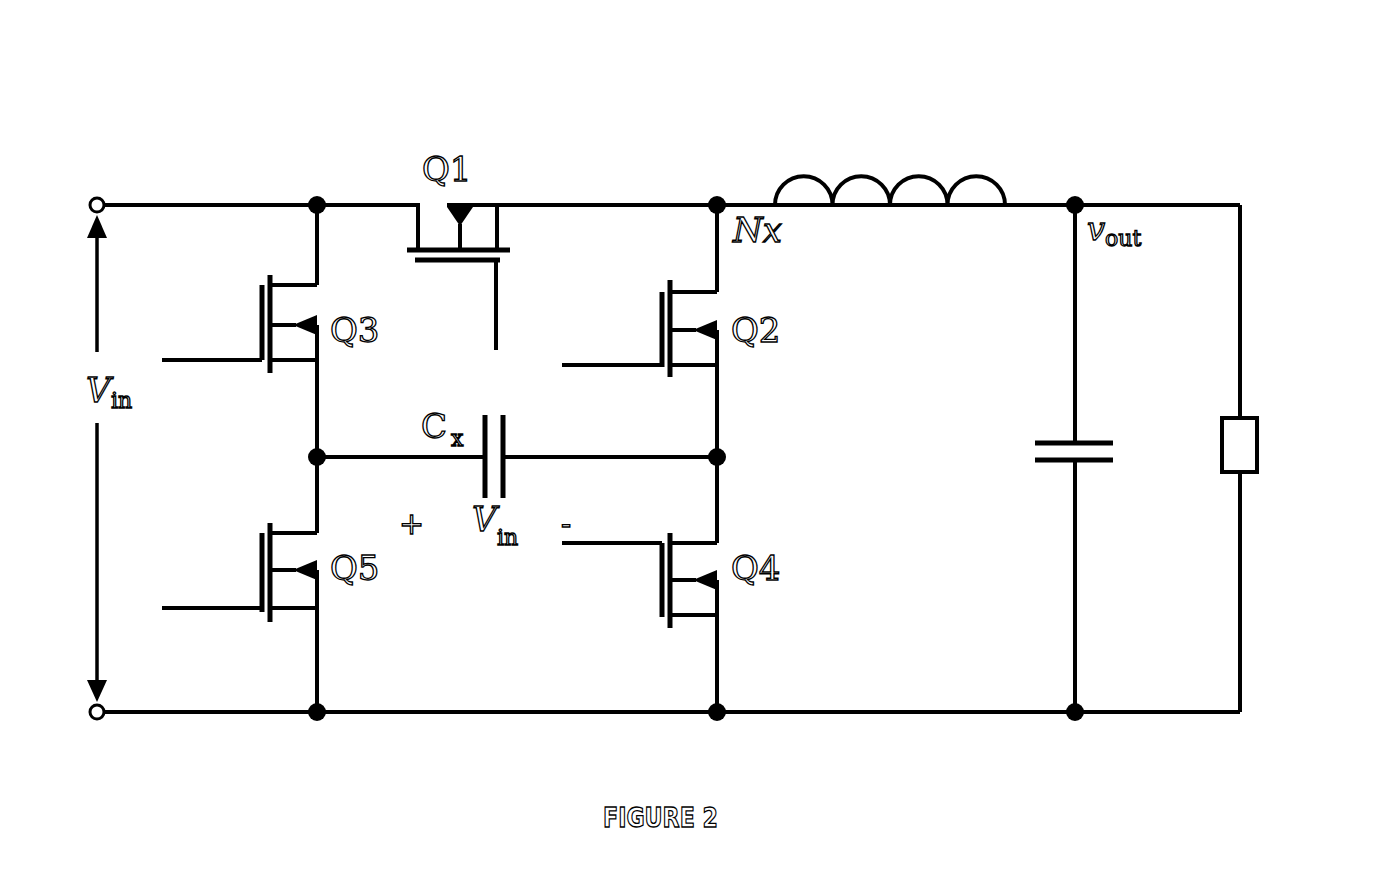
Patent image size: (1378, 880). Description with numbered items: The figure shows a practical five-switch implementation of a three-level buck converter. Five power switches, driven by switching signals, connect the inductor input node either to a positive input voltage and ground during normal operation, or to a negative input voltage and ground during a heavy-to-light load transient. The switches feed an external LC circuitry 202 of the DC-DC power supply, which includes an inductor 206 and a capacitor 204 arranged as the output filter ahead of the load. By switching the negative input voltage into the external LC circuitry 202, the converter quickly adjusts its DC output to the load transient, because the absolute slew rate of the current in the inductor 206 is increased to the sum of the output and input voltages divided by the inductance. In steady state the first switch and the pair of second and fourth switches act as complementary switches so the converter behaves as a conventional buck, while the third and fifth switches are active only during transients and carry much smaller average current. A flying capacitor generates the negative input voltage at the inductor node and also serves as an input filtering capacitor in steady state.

The external LC circuitry 202 is at (1064, 108).
The capacitor 204 is at (1040, 443).
The inductor 206 is at (791, 177).